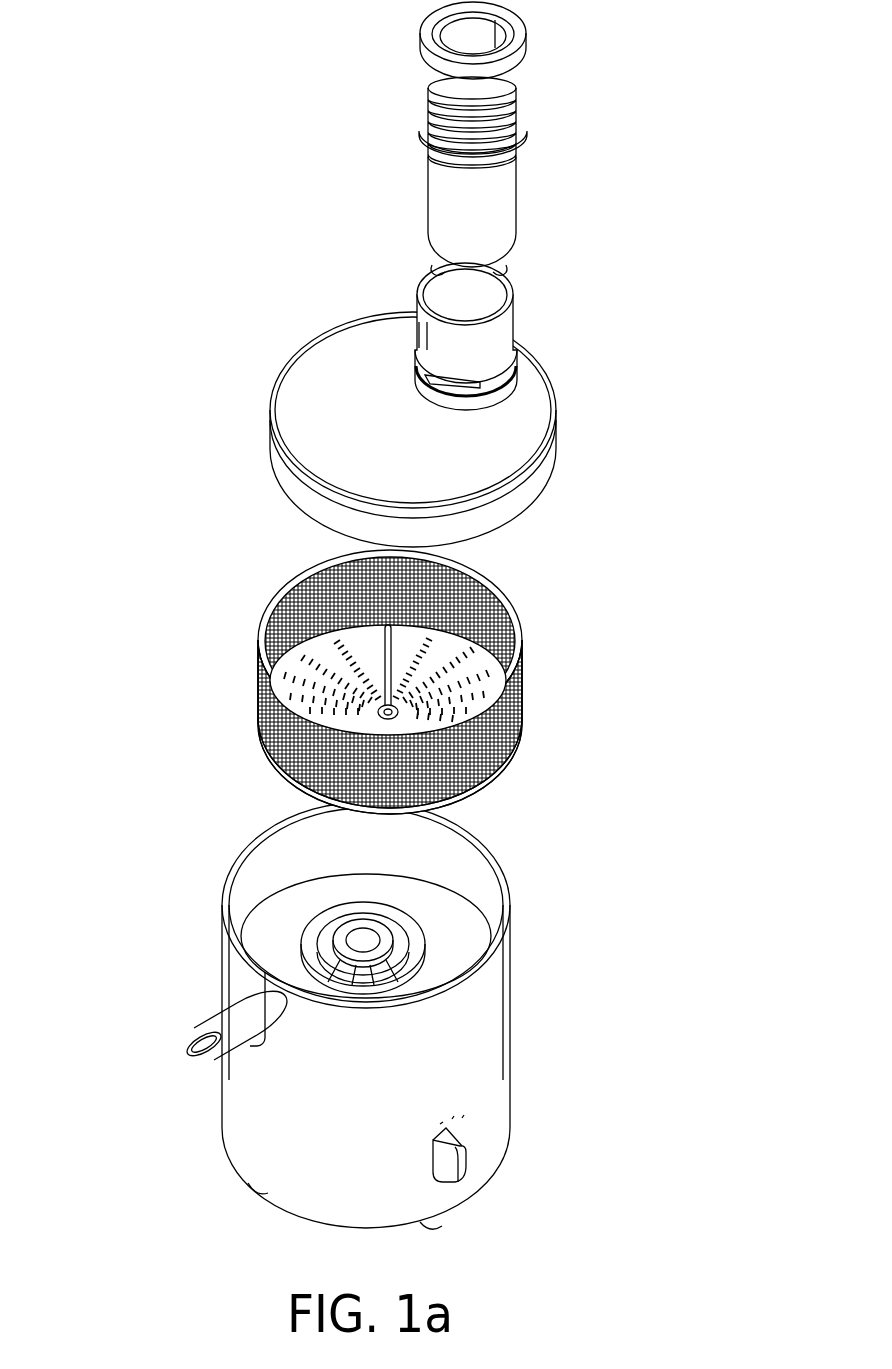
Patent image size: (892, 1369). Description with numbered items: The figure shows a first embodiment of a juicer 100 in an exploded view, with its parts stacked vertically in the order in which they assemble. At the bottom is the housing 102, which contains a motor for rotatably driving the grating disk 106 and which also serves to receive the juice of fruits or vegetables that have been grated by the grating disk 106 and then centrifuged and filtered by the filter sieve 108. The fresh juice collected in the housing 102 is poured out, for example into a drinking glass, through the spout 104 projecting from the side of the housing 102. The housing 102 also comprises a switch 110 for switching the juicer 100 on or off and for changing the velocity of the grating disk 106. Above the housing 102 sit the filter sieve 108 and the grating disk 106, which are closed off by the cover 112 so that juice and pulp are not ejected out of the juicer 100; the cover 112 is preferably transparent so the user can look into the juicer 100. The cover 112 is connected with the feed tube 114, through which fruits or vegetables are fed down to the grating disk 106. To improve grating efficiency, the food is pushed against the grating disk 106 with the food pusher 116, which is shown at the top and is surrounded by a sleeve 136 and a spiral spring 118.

The juicer 100 is at (176, 331).
The housing 102 is at (510, 1032).
The spout 104 is at (193, 1042).
The grating disk 106 is at (460, 684).
The filter sieve 108 is at (523, 683).
The switch 110 is at (466, 1165).
The cover 112 is at (270, 430).
The feed tube 114 is at (555, 307).
The food pusher 116 is at (558, 141).
The spiral spring 118 is at (428, 107).
The sleeve 136 is at (516, 200).